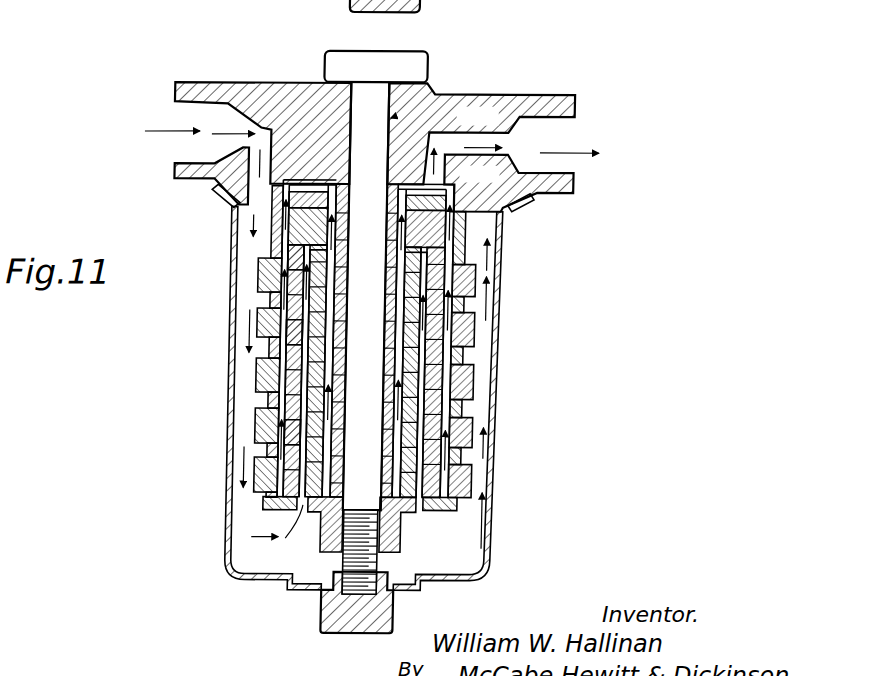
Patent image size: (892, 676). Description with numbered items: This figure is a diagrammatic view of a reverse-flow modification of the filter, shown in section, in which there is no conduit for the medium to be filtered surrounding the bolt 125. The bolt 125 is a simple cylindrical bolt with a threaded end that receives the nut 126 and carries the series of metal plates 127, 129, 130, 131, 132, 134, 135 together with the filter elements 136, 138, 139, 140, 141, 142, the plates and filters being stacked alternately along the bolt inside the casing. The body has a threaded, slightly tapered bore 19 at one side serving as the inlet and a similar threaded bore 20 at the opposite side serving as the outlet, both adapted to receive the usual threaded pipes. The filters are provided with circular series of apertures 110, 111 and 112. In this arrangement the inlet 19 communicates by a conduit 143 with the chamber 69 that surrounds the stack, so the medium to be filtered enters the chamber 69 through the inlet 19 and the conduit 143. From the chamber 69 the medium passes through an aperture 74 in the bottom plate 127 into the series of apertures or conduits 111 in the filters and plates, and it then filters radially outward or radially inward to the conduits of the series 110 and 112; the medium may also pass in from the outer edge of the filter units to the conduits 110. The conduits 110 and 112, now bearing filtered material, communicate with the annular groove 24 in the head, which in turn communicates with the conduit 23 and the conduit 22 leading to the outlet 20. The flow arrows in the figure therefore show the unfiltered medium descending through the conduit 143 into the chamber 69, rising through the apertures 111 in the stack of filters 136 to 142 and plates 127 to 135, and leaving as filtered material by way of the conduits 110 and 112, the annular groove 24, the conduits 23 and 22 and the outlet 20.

The threaded bore (inlet) 19 is at (202, 83).
The conduit 143 is at (276, 147).
The bolt 125 is at (435, 88).
The threaded bore (outlet) 20 is at (553, 116).
The conduit 22 is at (477, 116).
The annular groove 24 is at (452, 182).
The conduit 23 is at (426, 163).
The metal plate 135 is at (504, 211).
The metal plate 134 is at (470, 256).
The metal plate 132 is at (471, 306).
The metal plate 131 is at (473, 356).
The metal plate 130 is at (469, 407).
The metal plate 129 is at (470, 457).
The bottom plate 127 is at (470, 507).
The nut 126 is at (399, 557).
The aperture 74 is at (332, 558).
The chamber 69 is at (256, 546).
The filter element 142 is at (276, 229).
The series of apertures (conduits) 110 is at (275, 266).
The filter element 141 is at (264, 278).
The series of apertures (conduits) 111 is at (312, 327).
The filter element 140 is at (275, 337).
The filter element 139 is at (278, 381).
The series of apertures (conduits) 112 is at (326, 420).
The filter element 138 is at (264, 438).
The filter element 136 is at (264, 470).